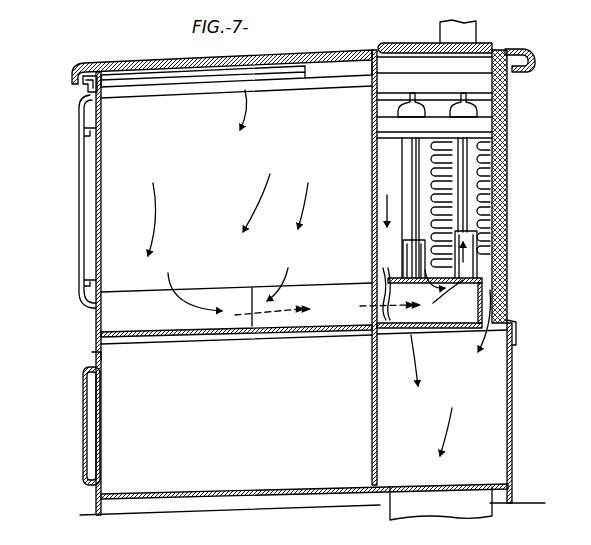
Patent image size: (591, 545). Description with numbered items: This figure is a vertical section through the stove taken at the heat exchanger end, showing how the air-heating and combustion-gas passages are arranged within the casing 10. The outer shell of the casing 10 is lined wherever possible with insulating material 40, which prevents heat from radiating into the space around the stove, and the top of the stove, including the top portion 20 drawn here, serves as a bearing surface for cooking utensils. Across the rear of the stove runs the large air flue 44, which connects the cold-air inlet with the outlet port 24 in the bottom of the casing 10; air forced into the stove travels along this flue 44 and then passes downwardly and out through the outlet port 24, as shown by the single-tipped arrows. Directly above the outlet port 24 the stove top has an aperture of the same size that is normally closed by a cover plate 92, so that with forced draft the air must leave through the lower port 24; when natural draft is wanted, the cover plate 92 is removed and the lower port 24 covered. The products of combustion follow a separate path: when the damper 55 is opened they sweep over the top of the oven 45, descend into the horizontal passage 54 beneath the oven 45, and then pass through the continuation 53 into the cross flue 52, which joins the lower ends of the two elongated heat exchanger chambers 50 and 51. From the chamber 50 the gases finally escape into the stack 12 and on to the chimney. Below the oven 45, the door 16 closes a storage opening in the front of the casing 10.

The casing 10 is at (94, 208).
The stack 12 is at (467, 33).
The door 16 is at (83, 409).
The cover 20 is at (320, 55).
The outlet port 24 is at (393, 493).
The insulating material 40 is at (143, 44).
The air flue 44 is at (508, 157).
The oven 45 is at (117, 149).
The heat exchanger chamber 50 is at (470, 218).
The heat exchanger chamber 51 is at (405, 184).
The cross flue 52 is at (455, 297).
The continuation of cross flue 53 is at (392, 278).
The horizontal passage 54 is at (117, 312).
The damper 55 is at (84, 92).
The cover plate 92 is at (416, 43).